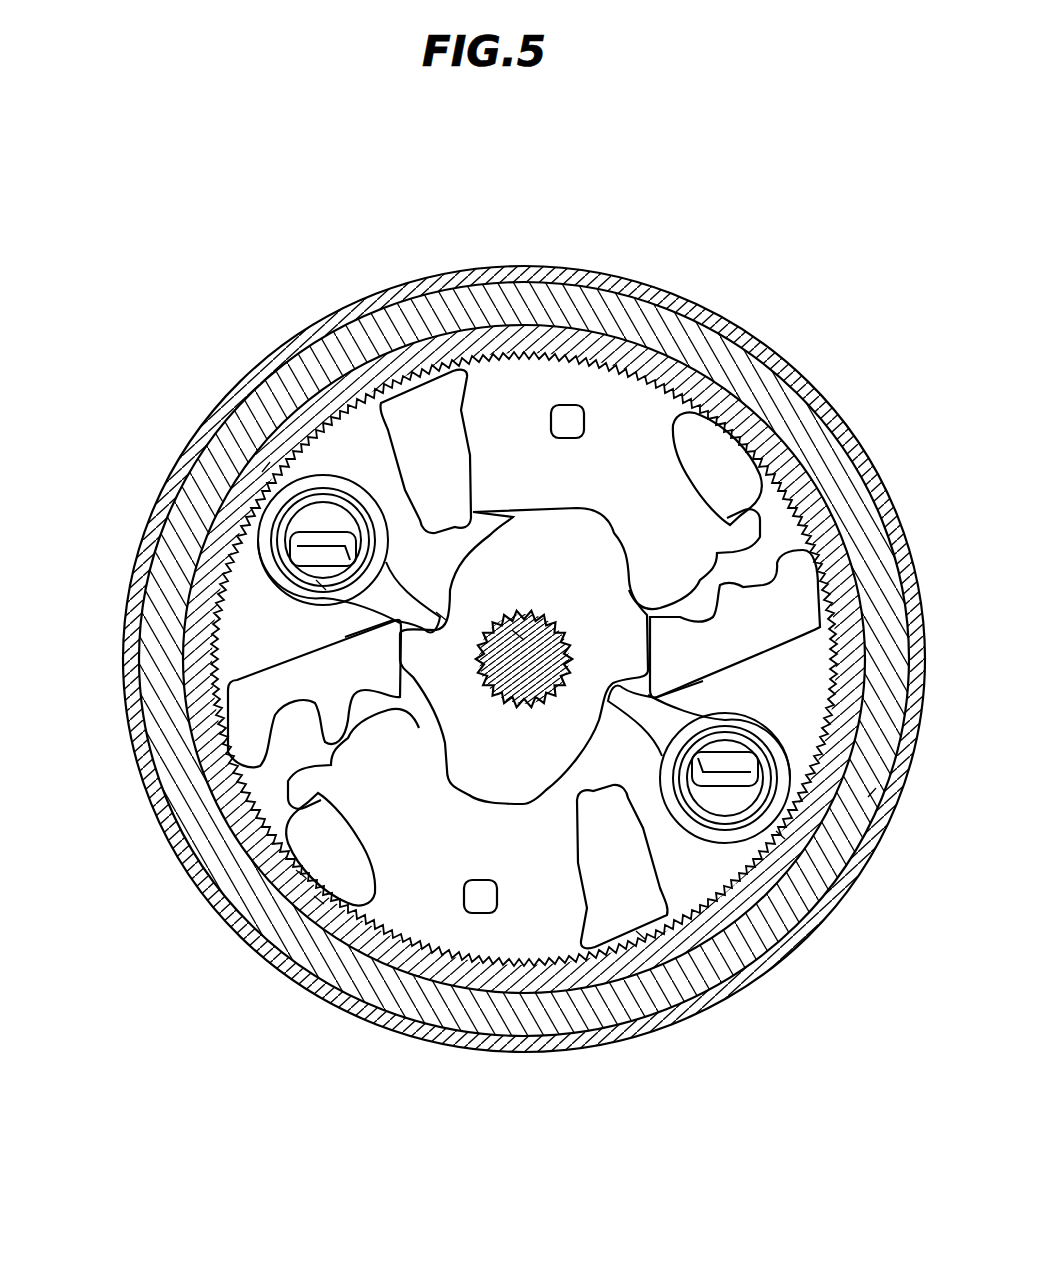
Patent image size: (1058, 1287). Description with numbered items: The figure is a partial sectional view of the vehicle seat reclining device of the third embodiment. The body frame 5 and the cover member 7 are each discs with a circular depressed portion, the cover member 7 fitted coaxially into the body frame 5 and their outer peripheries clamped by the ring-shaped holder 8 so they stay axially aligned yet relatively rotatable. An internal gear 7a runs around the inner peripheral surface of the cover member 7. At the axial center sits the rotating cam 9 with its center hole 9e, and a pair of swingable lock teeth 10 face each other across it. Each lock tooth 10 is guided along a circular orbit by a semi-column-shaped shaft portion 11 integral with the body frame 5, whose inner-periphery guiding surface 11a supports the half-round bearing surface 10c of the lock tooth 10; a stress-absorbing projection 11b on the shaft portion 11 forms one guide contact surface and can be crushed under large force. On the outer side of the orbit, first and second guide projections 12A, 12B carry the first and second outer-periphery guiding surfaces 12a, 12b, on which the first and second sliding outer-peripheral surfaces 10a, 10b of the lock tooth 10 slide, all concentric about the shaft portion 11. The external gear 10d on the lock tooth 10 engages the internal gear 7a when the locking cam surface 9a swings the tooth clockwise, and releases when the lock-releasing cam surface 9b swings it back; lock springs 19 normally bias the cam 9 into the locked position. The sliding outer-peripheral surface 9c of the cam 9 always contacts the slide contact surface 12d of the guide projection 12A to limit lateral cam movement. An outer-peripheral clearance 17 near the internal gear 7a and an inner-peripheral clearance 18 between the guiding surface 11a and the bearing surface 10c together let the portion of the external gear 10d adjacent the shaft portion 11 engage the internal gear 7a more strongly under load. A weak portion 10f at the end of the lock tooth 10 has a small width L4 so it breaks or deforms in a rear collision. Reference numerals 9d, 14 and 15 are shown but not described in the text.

The body frame 5 is at (785, 395).
The cover member 7 is at (830, 455).
The internal gear 7a is at (478, 952).
The ring-shaped holder 8 is at (775, 333).
The cam 9 is at (607, 640).
The locking cam surface 9a is at (567, 824).
The lock-releasing cam surface 9b is at (450, 782).
The sliding outer-peripheral surface 9c is at (320, 585).
The rotor lobe tip 9d is at (440, 617).
The center hole 9e is at (546, 667).
The lock tooth 10 is at (682, 541).
The first sliding outer-peripheral surface 10a is at (393, 665).
The second sliding outer-peripheral surface 10b is at (780, 835).
The bearing surface 10c is at (318, 900).
The external gear 10d is at (521, 810).
The weak portion 10f is at (343, 697).
The shaft portion 11 is at (732, 481).
The inner-periphery guiding surface 11a is at (372, 848).
The projection 11b is at (362, 848).
The first guide projection 12A is at (783, 636).
The second guide projection 12B is at (456, 463).
The first outer-periphery guiding surface 12a is at (373, 687).
The second outer-periphery guiding surface 12b is at (579, 847).
The slide contact surface 12d is at (445, 787).
The spiral spring 14 is at (330, 545).
The shaft 15 is at (518, 645).
The outer-peripheral clearance 17 is at (640, 935).
The inner-peripheral clearance 18 is at (300, 873).
The lock spring 19 is at (266, 470).
The width L4 is at (100, 828).